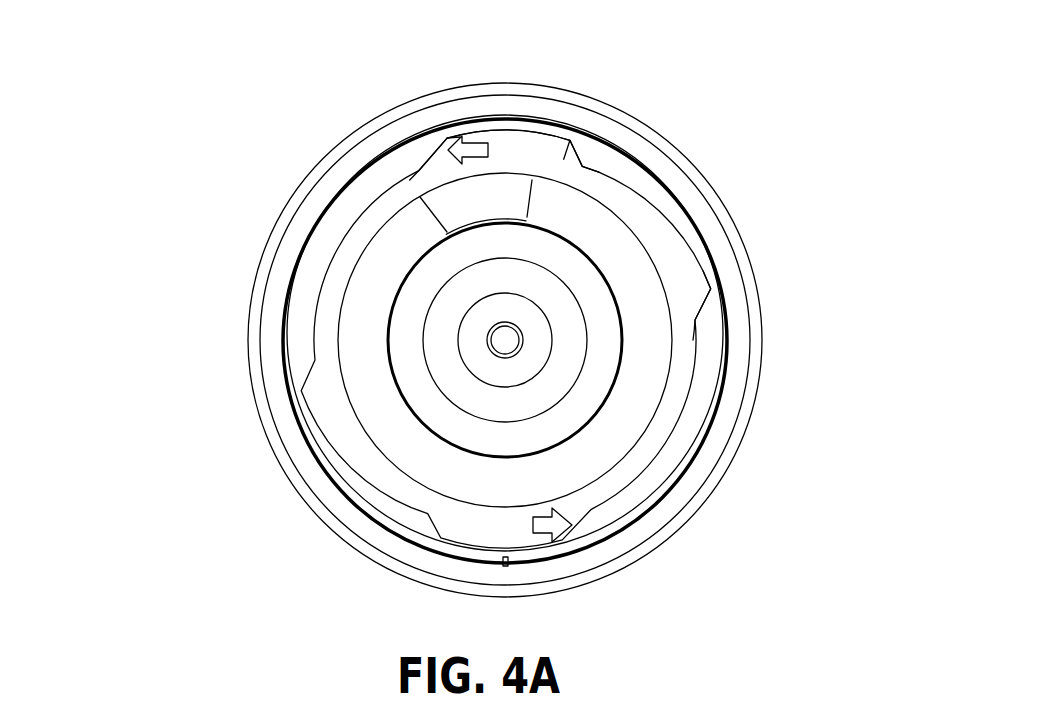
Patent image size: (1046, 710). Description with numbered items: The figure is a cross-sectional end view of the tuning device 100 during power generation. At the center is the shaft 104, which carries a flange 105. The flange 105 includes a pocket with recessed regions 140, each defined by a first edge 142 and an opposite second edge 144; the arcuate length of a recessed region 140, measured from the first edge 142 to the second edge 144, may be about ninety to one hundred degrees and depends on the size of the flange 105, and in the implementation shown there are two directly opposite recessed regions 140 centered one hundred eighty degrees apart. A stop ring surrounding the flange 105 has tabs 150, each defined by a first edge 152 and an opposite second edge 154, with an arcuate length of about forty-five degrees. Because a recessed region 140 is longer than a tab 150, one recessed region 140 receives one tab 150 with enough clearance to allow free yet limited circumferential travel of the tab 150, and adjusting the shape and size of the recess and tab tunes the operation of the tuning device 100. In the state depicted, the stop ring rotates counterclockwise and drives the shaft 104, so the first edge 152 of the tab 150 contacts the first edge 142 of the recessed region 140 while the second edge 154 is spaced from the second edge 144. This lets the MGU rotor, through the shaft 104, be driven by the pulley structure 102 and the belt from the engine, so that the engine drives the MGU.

The tuning device 100 is at (491, 314).
The pulley structure 102 is at (248, 293).
The shaft 104 is at (613, 388).
The flange 105 is at (728, 392).
The recessed region 140 is at (652, 183).
The first edge 142 is at (324, 133).
The second edge 144 is at (698, 316).
The tab 150 is at (522, 128).
The first edge 152 is at (437, 148).
The second edge 154 is at (573, 148).